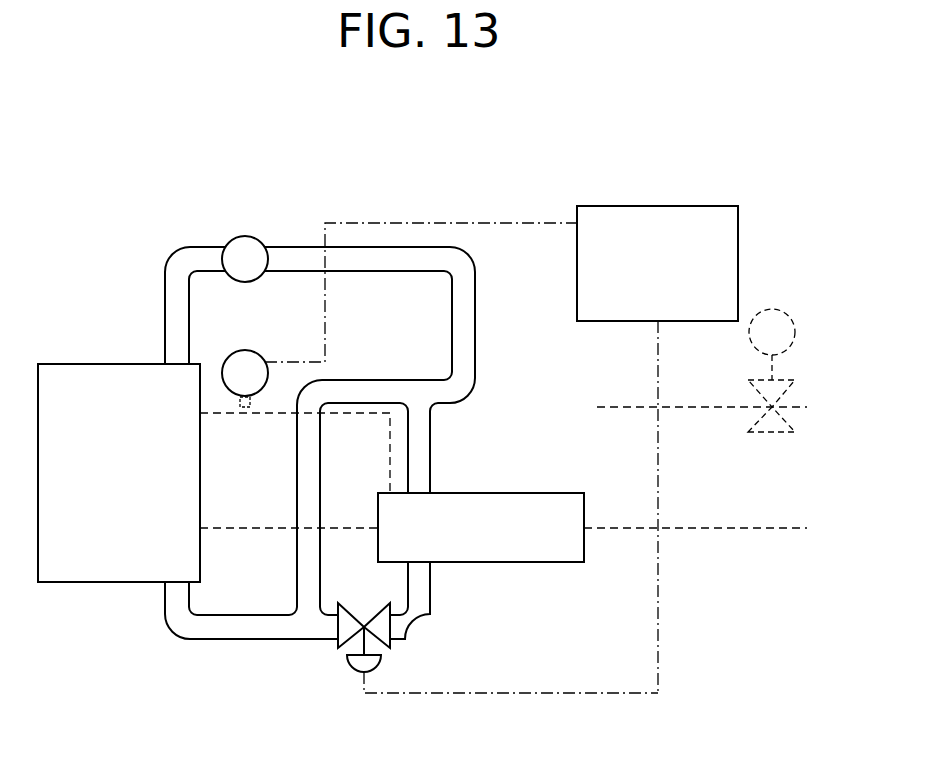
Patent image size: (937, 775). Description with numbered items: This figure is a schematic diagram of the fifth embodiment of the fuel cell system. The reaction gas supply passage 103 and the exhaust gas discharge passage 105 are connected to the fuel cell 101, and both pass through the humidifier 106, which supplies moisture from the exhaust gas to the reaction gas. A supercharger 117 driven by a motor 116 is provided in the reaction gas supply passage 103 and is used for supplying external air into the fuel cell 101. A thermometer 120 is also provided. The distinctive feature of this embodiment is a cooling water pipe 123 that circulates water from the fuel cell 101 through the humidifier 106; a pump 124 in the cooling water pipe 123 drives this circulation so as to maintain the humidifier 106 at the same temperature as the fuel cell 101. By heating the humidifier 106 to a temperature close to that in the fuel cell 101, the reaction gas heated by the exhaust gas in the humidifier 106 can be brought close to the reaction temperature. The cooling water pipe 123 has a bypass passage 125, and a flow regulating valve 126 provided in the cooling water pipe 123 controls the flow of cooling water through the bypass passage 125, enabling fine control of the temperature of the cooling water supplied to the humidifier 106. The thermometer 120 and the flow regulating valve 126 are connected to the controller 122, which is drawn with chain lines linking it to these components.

The fuel cell 101 is at (83, 568).
The reaction gas supply passage 103 is at (366, 413).
The exhaust gas discharge passage 105 is at (255, 528).
The humidifier 106 is at (488, 548).
The motor 116 is at (773, 311).
The supercharger 117 is at (775, 433).
The thermometer 120 is at (243, 349).
The controller 122 is at (668, 205).
The cooling water pipe 123 is at (290, 245).
The pump 124 is at (240, 237).
The bypass passage 125 is at (308, 572).
The flow regulating valve 126 is at (344, 648).